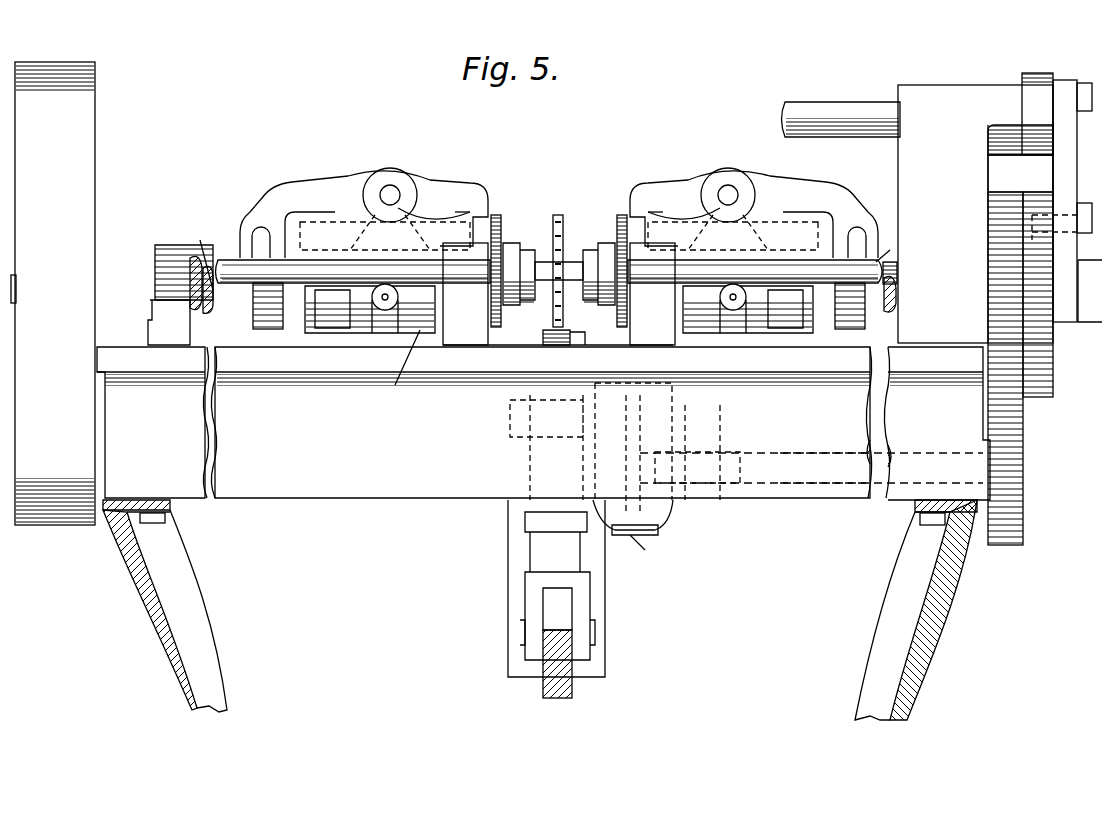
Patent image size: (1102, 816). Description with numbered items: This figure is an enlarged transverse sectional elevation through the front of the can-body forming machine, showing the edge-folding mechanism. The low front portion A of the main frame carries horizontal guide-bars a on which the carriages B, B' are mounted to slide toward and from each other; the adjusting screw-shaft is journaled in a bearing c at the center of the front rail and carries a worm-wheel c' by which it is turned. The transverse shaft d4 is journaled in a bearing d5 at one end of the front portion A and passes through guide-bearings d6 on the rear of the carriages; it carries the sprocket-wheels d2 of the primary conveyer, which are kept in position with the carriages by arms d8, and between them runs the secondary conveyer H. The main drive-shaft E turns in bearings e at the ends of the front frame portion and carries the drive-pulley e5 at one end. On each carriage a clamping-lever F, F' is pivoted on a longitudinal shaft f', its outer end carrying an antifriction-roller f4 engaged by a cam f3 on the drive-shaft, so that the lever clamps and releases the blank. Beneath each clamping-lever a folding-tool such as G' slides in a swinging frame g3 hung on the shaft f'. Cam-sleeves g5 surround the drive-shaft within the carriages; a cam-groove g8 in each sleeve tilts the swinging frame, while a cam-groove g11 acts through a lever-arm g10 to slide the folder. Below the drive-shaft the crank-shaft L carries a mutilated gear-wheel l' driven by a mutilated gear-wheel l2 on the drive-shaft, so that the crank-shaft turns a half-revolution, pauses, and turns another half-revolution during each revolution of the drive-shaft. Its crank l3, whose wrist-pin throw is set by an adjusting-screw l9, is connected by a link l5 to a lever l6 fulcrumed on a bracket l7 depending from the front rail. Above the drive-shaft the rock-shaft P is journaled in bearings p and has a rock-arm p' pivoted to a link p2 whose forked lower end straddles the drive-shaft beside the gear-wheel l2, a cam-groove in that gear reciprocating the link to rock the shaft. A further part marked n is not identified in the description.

The drive-pulley e5 is at (53, 293).
The guide-bars a is at (440, 375).
The crank-shaft L is at (875, 465).
The front portion A is at (203, 614).
The bearing d5 is at (158, 250).
The bearings e is at (169, 322).
The shaft d4 is at (195, 255).
The main drive-shaft E is at (880, 318).
The clamping-lever F is at (364, 204).
The clamping-lever F' is at (754, 204).
The swinging frame g3 is at (318, 215).
The shaft f' is at (559, 190).
The folding-tool G' is at (559, 199).
The antifriction-roller f4 is at (261, 236).
The guide-bearings d6 is at (470, 272).
The cam f3 is at (255, 325).
The cam-groove g11 is at (335, 330).
The cam-groove g8 is at (360, 328).
The lever-arm g10 is at (572, 308).
The cam-sleeves g5 is at (399, 369).
The carriage B' is at (465, 294).
The carriage B is at (652, 294).
The sprocket-wheels d2 is at (500, 215).
The arms d8 is at (522, 240).
The secondary conveyer H is at (556, 215).
The bearing c is at (544, 335).
The worm-wheel c' is at (582, 335).
The rock-shaft P is at (860, 105).
The bearings p is at (975, 214).
The rock-arm p' is at (1020, 114).
The link p2 is at (1055, 177).
The mutilated gear-wheel l2 is at (1055, 350).
The mutilated gear-wheel l' is at (1014, 368).
The bracket n is at (1040, 238).
The bracket l7 is at (600, 593).
The link l5 is at (556, 542).
The lever l6 is at (558, 690).
The crank l3 is at (665, 520).
The adjusting-screw l9 is at (643, 549).